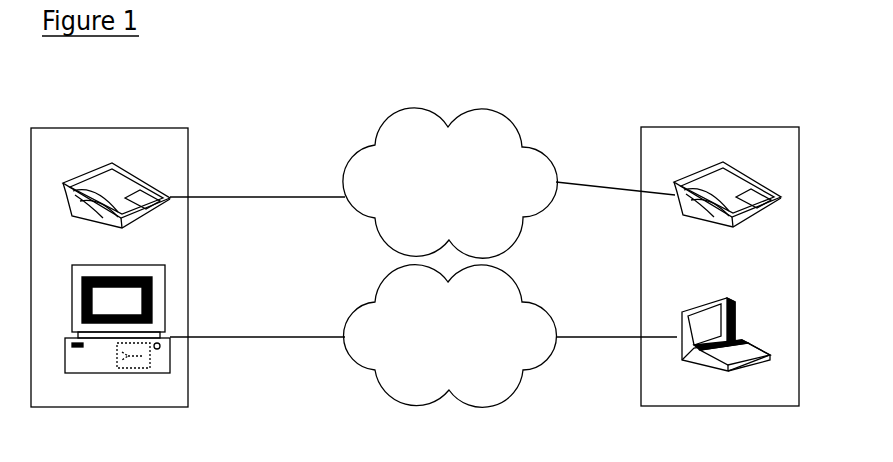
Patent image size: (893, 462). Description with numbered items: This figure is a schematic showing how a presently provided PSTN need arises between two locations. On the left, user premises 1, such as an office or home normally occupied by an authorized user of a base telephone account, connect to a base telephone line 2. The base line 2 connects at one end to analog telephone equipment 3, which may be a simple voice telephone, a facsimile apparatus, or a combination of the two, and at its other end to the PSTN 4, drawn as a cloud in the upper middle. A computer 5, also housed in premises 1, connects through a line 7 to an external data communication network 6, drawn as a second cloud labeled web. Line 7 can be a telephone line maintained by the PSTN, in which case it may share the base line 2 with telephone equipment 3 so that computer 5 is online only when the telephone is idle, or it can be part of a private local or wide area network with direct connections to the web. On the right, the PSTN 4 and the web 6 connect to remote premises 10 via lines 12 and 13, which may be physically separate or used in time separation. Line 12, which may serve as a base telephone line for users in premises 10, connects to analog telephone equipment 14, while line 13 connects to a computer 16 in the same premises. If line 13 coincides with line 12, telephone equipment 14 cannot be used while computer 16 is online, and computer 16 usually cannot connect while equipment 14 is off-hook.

The user premises 1 is at (80, 128).
The base telephone line 2 is at (279, 196).
The analog telephone equipment 3 is at (84, 181).
The PSTN 4 is at (430, 110).
The computer 5 is at (65, 285).
The external data communication network 6 is at (480, 407).
The line 7 is at (222, 338).
The remote premises 10 is at (662, 126).
The line 12 is at (623, 196).
The line 13 is at (598, 338).
The analog telephone equipment 14 is at (745, 180).
The computer 16 is at (737, 318).